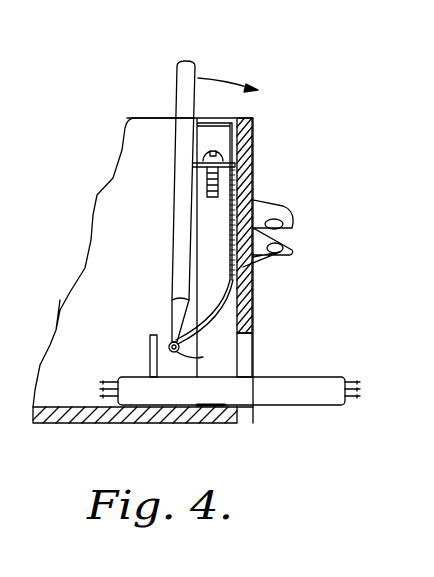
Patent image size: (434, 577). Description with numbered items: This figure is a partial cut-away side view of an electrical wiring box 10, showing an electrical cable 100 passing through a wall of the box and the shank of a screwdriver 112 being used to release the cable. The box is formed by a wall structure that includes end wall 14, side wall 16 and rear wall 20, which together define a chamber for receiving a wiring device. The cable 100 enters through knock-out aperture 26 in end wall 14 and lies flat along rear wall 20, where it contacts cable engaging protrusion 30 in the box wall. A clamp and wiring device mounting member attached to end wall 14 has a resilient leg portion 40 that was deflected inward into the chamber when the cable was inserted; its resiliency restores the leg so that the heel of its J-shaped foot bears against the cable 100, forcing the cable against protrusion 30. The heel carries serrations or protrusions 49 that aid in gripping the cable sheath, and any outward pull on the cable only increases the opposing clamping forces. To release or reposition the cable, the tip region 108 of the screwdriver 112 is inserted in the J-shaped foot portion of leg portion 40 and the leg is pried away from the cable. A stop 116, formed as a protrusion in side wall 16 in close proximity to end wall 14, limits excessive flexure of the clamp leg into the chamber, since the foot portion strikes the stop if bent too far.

The electrical wiring box 10 is at (97, 179).
The end wall 14 is at (253, 152).
The side wall 16 is at (150, 178).
The rear wall 20 is at (100, 423).
The knock-out aperture 26 is at (255, 352).
The cable engaging protrusion 30 is at (208, 408).
The leg portion 40 is at (222, 287).
The serrations or protrusions 49 is at (198, 354).
The electrical cable 100 is at (298, 378).
The lever tip 108 is at (168, 338).
The screwdriver 112 is at (172, 231).
The stop 116 is at (149, 350).